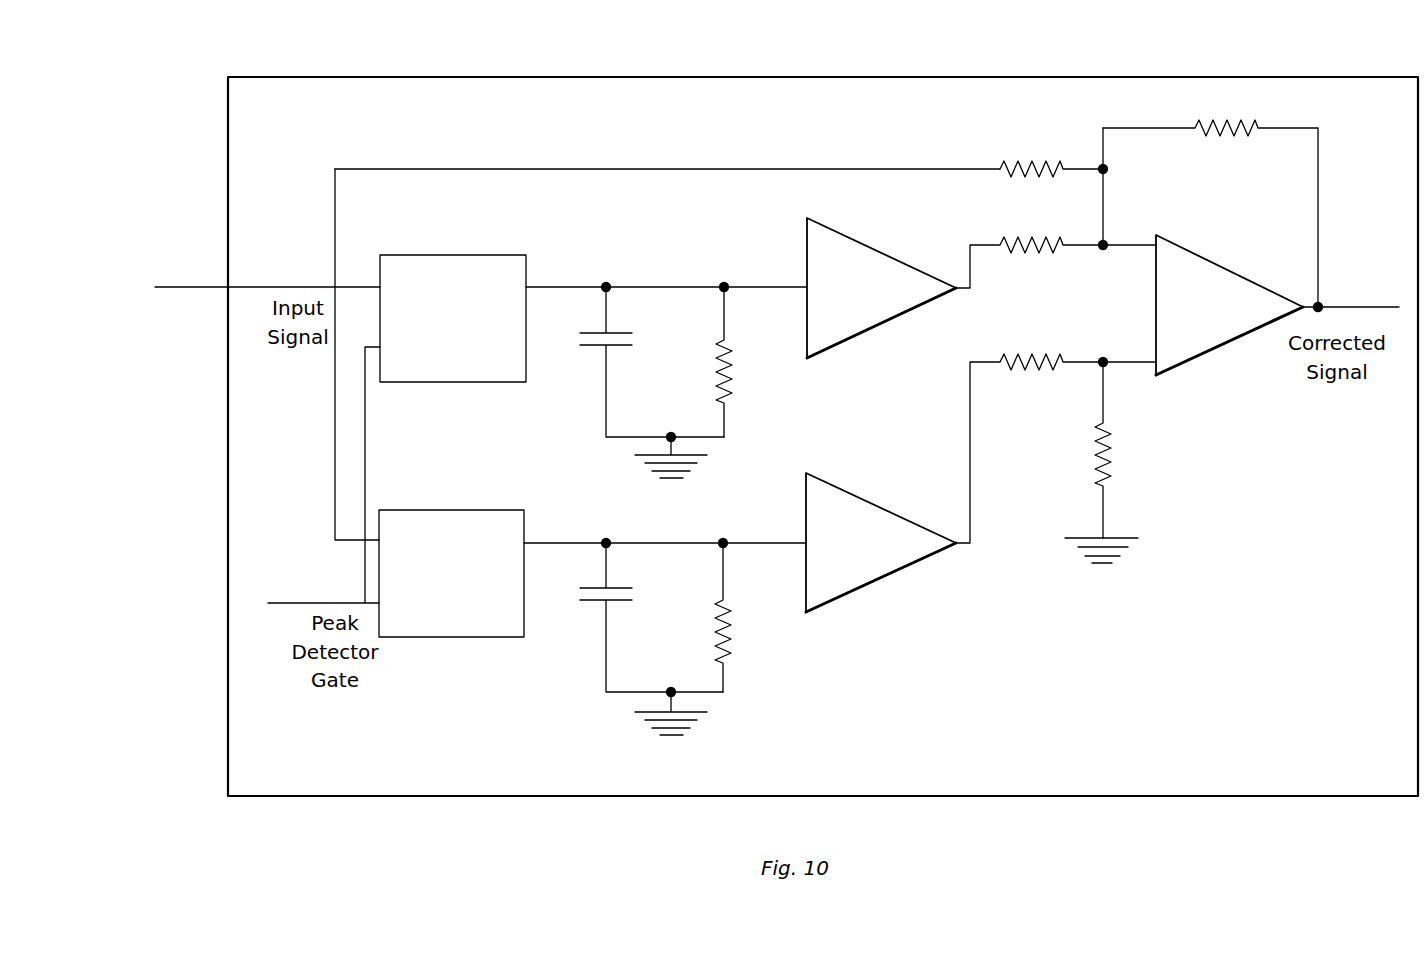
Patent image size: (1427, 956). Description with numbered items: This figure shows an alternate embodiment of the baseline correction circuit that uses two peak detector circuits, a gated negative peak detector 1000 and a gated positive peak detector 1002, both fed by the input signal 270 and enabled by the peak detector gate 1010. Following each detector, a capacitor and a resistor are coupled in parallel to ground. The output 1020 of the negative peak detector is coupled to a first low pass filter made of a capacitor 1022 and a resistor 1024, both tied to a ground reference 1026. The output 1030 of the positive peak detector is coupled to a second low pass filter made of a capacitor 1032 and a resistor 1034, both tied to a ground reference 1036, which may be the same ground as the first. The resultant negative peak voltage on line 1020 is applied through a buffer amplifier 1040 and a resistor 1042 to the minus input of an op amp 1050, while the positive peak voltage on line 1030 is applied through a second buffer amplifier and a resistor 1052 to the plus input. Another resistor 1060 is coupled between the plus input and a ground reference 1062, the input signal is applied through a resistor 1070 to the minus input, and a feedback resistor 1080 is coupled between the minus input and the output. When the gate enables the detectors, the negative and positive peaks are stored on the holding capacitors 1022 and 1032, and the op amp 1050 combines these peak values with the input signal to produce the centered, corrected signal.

The input signal 270 is at (202, 284).
The gated negative peak detector 1000 is at (418, 254).
The gated positive peak detector 1002 is at (441, 509).
The peak detector gate 1010 is at (301, 601).
The output 1020 is at (561, 284).
The capacitor 1022 is at (598, 348).
The resistor 1024 is at (727, 389).
The ground reference 1026 is at (692, 465).
The output 1030 is at (561, 541).
The capacitor 1032 is at (598, 604).
The resistor 1034 is at (729, 646).
The ground reference 1036 is at (692, 720).
The buffer amplifier 1040 is at (880, 250).
The resistor 1042 is at (1037, 263).
The op amp 1050 is at (880, 505).
The resistor R9 1052 is at (1033, 376).
The resistor 1060 is at (1108, 469).
The ground reference 1062 is at (1127, 549).
The resistor 1070 is at (1018, 188).
The feedback resistor 1080 is at (1218, 138).